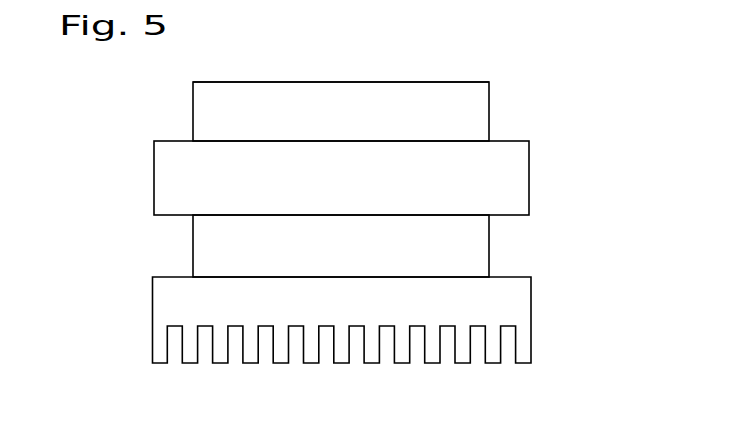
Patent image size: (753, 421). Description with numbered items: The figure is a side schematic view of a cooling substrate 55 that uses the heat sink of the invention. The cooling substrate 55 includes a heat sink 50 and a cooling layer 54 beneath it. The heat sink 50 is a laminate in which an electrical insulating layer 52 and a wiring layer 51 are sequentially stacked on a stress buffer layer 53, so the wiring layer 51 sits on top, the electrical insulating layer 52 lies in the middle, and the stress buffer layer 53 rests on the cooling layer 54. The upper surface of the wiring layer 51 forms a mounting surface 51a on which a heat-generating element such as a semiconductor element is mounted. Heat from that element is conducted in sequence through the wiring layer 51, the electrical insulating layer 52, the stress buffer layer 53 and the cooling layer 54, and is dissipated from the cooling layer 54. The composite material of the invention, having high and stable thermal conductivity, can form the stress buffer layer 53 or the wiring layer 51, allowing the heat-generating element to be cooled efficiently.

The heat sink 50 is at (389, 165).
The wiring layer 51 is at (480, 113).
The mounting surface 51a is at (443, 82).
The electrical insulating layer 52 is at (520, 179).
The stress buffer layer 53 is at (389, 246).
The cooling layer 54 is at (388, 320).
The cooling substrate 55 is at (408, 208).